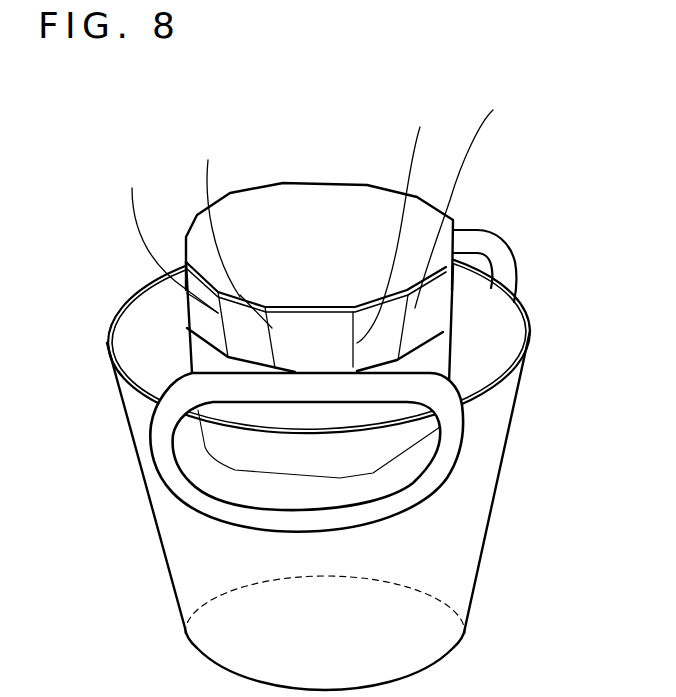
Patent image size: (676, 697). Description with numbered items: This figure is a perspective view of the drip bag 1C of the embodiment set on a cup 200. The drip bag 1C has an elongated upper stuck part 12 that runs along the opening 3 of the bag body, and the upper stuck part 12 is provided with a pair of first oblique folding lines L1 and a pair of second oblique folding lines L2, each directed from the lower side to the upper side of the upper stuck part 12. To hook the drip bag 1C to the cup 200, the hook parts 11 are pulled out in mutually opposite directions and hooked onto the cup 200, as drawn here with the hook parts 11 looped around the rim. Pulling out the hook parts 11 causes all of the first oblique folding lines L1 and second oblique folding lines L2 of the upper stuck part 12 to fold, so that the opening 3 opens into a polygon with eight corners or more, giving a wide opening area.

The drip bag 1C is at (371, 316).
The opening 3 is at (333, 207).
The hook parts 11 is at (407, 500).
The upper stuck part 12 is at (418, 320).
The cup 200 is at (447, 558).
The first oblique folding lines L1 is at (321, 218).
The second oblique folding lines L2 is at (320, 191).